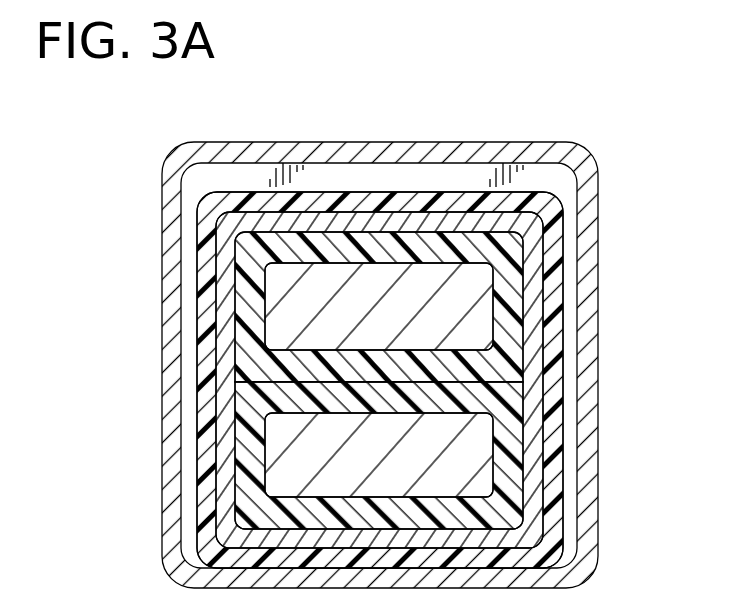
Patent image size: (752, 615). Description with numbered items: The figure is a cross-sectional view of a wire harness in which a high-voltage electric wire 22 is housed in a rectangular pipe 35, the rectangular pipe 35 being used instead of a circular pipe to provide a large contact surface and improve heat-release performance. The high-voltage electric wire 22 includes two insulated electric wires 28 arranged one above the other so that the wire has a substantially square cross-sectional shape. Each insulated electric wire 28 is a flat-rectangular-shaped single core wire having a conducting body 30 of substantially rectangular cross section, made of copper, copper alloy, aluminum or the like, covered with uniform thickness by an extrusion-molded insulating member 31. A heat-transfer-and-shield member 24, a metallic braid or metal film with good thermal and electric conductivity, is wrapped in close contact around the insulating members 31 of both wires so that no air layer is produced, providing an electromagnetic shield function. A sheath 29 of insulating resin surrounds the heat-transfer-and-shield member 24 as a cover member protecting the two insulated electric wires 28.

The high-voltage electric wire 22 is at (453, 185).
The heat-transfer-and-shield member 24 is at (215, 323).
The insulated electric wire 28 is at (476, 380).
The sheath 29 is at (207, 463).
The conducting body 30 is at (472, 287).
The insulating member 31 is at (513, 312).
The rectangular pipe 35 is at (330, 143).